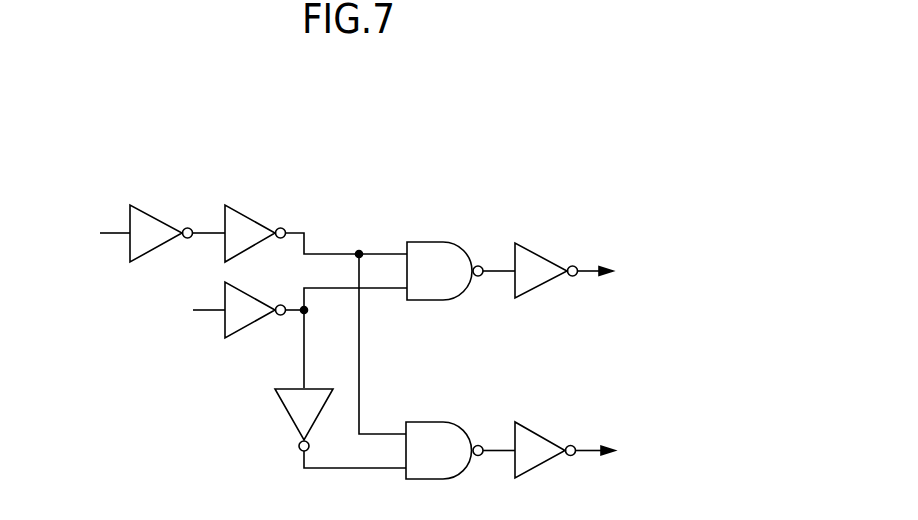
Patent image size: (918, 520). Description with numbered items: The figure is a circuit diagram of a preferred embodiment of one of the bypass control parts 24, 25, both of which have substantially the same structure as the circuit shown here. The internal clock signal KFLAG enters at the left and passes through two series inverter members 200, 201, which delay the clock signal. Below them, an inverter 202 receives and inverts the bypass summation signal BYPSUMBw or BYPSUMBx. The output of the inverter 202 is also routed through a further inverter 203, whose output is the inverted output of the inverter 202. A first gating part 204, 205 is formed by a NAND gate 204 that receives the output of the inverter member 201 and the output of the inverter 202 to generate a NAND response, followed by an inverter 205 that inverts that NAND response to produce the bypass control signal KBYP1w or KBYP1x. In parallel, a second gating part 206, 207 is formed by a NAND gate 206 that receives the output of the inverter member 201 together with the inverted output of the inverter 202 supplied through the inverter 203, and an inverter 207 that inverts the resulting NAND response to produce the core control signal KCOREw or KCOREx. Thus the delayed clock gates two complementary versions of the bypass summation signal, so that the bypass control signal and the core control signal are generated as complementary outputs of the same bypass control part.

The first bypass control part 24 is at (382, 280).
The second bypass control part 25 is at (277, 105).
The inverter member 200 is at (143, 222).
The inverter member 201 is at (243, 228).
The inverter 202 is at (240, 325).
The inverter 203 is at (290, 402).
The first gating part NAND gate 204 is at (420, 252).
The first gating part inverter 205 is at (523, 260).
The second gating part NAND gate 206 is at (432, 435).
The second gating part inverter 207 is at (523, 442).